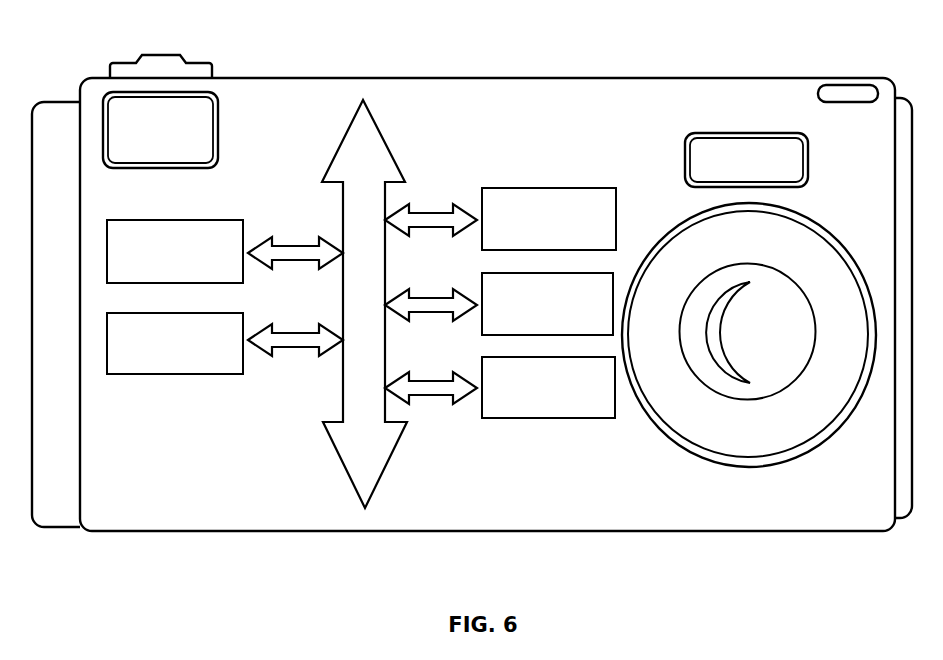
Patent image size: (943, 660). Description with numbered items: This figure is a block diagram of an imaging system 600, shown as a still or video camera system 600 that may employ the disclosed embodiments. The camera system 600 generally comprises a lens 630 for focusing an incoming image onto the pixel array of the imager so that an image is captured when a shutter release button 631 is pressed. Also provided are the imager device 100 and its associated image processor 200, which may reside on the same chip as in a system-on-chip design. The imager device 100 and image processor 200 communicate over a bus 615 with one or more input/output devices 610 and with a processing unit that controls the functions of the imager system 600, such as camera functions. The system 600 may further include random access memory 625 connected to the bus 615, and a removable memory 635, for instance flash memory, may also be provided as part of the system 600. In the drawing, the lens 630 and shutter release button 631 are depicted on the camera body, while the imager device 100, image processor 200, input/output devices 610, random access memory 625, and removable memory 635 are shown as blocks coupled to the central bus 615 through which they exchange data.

The imaging system 600 is at (525, 57).
The shutter release button 631 is at (185, 63).
The lens 630 is at (807, 219).
The bus 615 is at (346, 471).
The image processor 200 is at (195, 267).
The removable memory 635 is at (197, 356).
The imager device 100 is at (490, 231).
The input/output devices 610 is at (516, 311).
The random access memory 625 is at (519, 399).